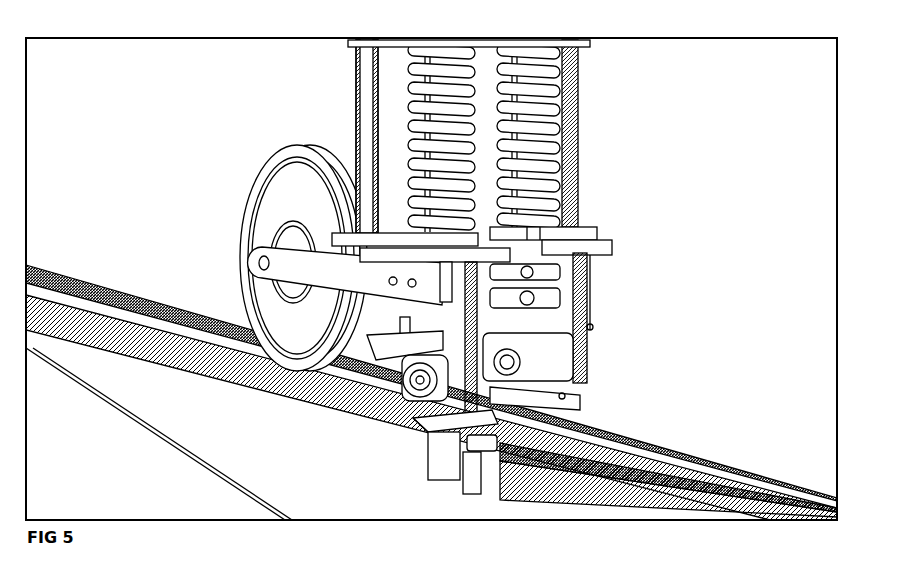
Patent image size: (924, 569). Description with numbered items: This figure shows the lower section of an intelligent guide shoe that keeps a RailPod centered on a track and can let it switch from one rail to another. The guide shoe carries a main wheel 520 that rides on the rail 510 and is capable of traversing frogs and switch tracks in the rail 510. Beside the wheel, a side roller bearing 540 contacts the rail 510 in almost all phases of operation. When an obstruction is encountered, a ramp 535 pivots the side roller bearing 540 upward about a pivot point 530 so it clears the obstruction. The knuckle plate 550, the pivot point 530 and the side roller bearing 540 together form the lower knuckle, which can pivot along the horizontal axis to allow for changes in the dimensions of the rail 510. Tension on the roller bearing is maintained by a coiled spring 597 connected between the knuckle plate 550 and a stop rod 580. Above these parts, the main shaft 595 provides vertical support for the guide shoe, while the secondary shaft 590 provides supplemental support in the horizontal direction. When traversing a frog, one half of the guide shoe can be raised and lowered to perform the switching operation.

The rail 510 is at (431, 381).
The main wheel 520 is at (204, 254).
The pivot point 530 is at (254, 397).
The ramp 535 is at (304, 451).
The side roller bearing 540 is at (475, 485).
The knuckle plate 550 is at (548, 392).
The stop rod 580 is at (684, 316).
The secondary shaft 590 is at (677, 133).
The main shaft 595 is at (657, 136).
The coiled spring 597 is at (652, 136).